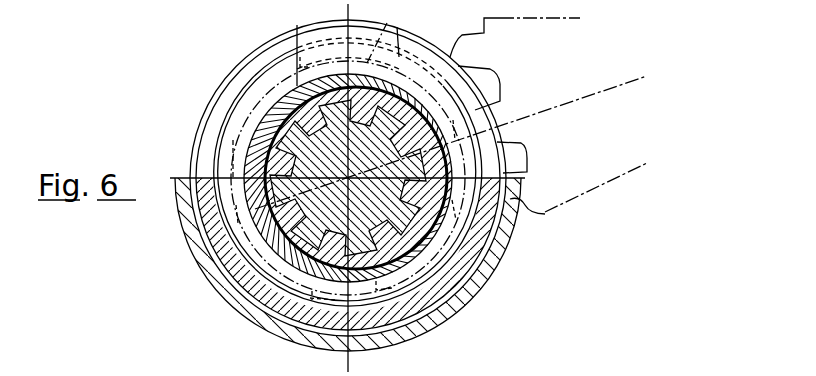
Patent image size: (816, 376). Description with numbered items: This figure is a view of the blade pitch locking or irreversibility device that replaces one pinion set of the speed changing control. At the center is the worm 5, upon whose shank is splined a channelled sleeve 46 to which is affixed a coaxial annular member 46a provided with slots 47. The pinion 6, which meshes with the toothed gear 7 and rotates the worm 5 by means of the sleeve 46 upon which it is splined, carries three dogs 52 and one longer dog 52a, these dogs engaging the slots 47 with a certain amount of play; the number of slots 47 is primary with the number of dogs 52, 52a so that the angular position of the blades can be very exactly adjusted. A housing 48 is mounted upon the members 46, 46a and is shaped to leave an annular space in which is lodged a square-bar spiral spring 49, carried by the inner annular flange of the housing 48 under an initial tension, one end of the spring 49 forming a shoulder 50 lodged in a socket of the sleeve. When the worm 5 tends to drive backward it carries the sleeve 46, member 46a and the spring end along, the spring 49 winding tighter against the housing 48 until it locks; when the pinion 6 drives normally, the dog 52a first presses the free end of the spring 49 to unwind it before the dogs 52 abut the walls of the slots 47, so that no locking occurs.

The worm 5 is at (400, 110).
The pinion 6 is at (444, 44).
The toothed gear 7 is at (578, 206).
The channelled sleeve 46 is at (297, 110).
The annular member 46a is at (470, 258).
The slots 47 is at (297, 57).
The housing 48 is at (193, 256).
The spring 49 is at (238, 93).
The shoulder 50 is at (303, 27).
The dogs 52 is at (291, 281).
The dog 52a is at (232, 160).